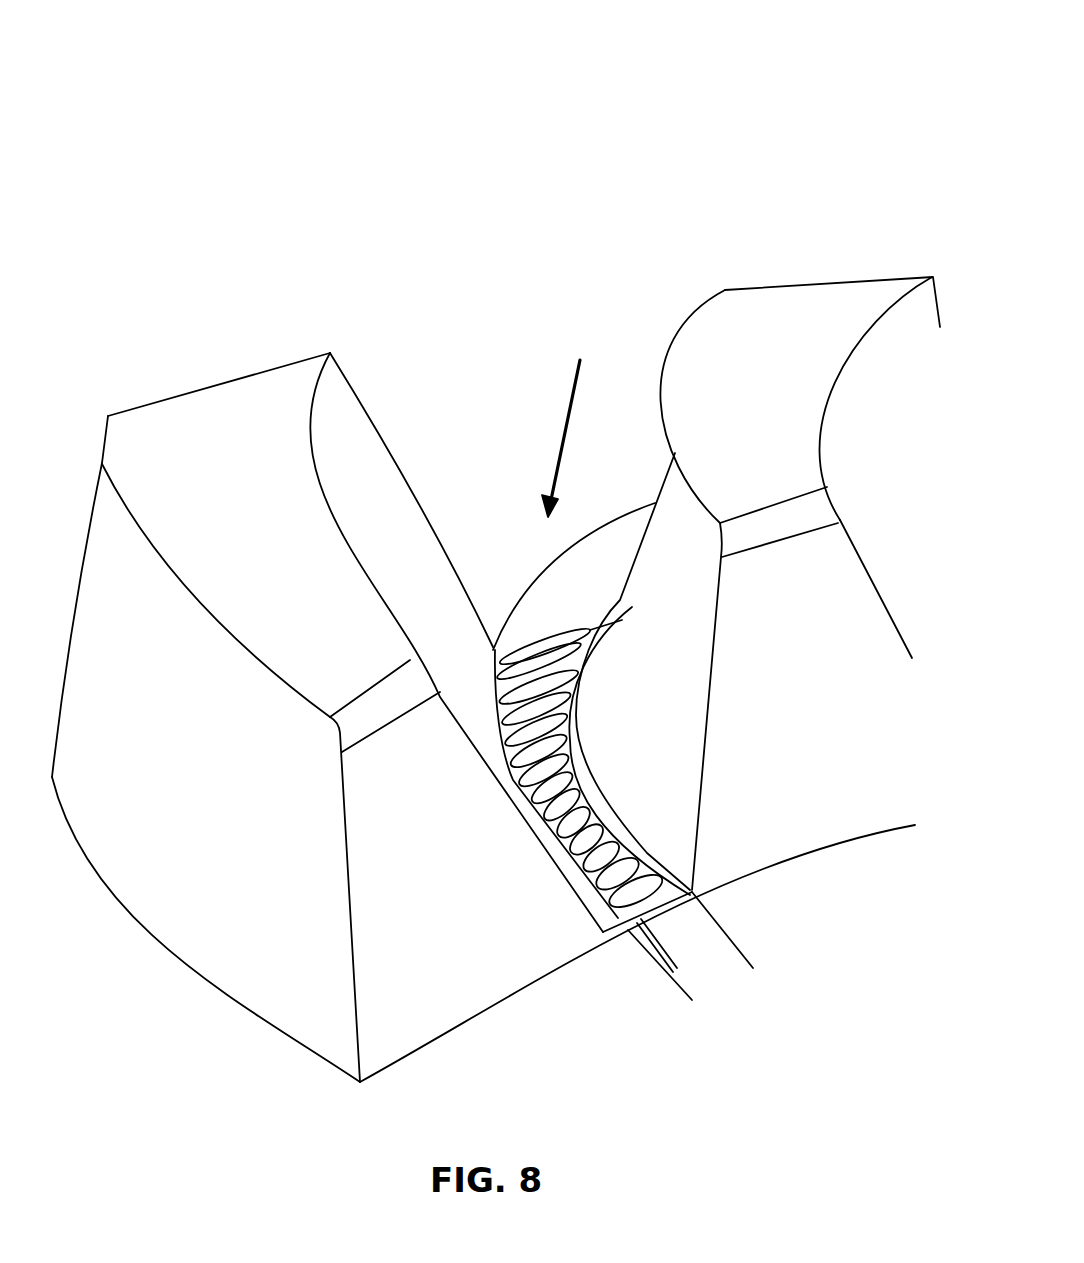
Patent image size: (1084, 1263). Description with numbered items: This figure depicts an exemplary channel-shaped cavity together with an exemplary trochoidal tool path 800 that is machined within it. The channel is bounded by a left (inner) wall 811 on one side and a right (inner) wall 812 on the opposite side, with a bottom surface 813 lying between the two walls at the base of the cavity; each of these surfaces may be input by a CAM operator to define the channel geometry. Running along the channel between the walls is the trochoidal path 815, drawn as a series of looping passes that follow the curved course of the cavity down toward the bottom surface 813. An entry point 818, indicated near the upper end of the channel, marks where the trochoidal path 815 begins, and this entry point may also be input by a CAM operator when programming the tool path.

The trochoidal tool path 800 is at (846, 94).
The left (inner) wall 811 is at (678, 487).
The right (inner) wall 812 is at (357, 458).
The bottom surface 813 is at (495, 653).
The trochoidal path 815 is at (634, 897).
The entry point 818 is at (560, 438).